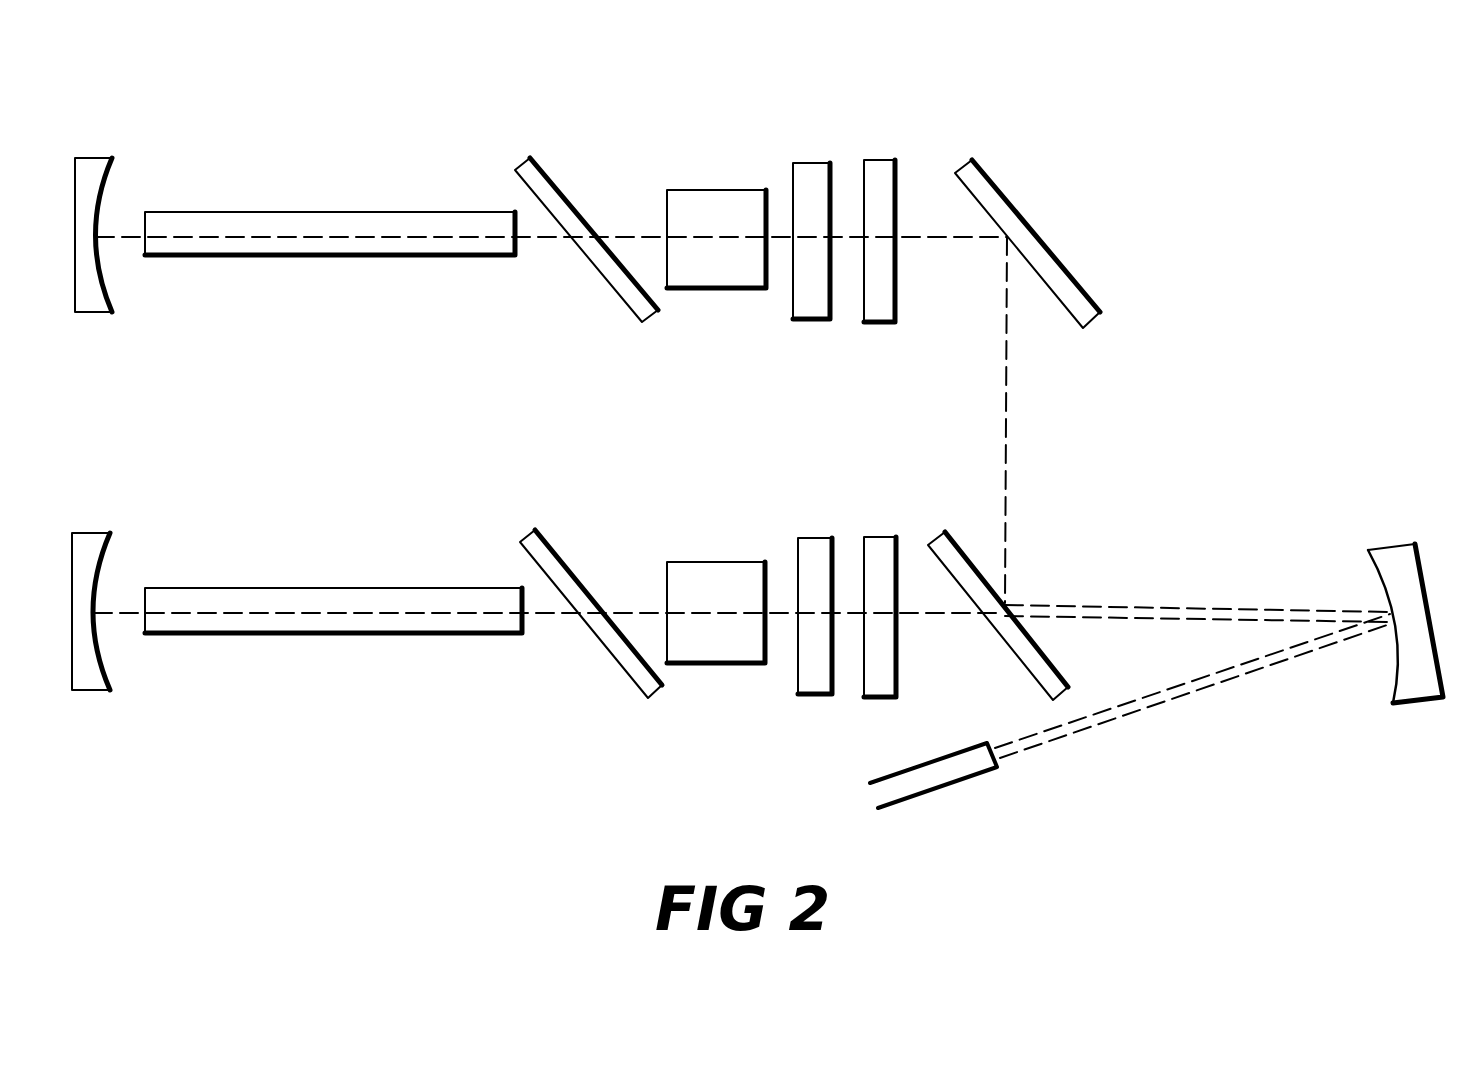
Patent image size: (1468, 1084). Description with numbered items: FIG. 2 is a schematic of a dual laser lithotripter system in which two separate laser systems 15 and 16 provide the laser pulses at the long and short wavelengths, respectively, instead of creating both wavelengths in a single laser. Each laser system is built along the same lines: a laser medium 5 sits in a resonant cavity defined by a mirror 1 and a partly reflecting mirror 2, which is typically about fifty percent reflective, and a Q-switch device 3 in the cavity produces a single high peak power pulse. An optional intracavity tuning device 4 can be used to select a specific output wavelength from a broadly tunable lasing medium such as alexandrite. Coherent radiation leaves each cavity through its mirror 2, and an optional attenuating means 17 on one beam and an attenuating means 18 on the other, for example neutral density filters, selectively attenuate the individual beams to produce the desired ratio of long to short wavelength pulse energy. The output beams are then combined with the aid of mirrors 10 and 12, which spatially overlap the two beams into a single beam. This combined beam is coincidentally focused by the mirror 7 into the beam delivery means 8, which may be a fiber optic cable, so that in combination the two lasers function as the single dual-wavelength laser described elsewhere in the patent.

The mirror 1 is at (94, 158).
The mirror 2 is at (812, 163).
The Q-switch device 3 is at (722, 190).
The intracavity tuning device 4 is at (528, 158).
The laser medium 5 is at (306, 212).
The mirror 7 is at (1397, 545).
The beam delivery means 8 is at (957, 783).
The mirror 10 is at (962, 162).
The mirror 12 is at (1030, 680).
The laser system 15 is at (354, 108).
The laser system 16 is at (310, 690).
The attenuating means 17 is at (878, 160).
The attenuating means 18 is at (890, 537).